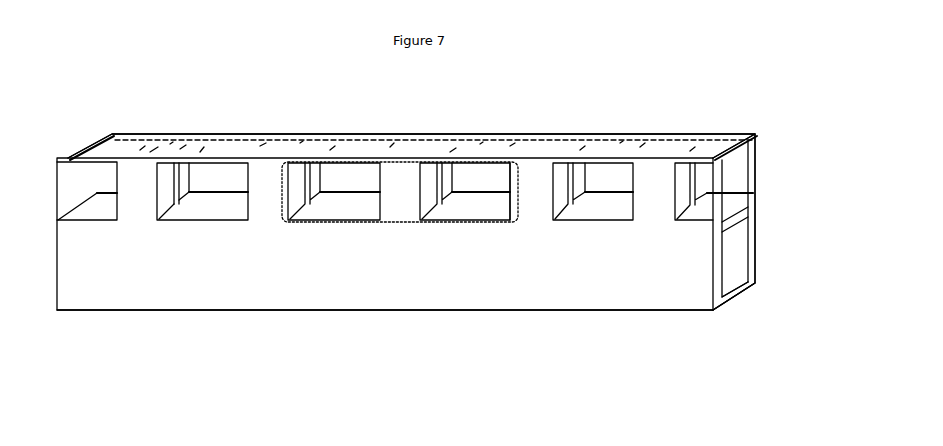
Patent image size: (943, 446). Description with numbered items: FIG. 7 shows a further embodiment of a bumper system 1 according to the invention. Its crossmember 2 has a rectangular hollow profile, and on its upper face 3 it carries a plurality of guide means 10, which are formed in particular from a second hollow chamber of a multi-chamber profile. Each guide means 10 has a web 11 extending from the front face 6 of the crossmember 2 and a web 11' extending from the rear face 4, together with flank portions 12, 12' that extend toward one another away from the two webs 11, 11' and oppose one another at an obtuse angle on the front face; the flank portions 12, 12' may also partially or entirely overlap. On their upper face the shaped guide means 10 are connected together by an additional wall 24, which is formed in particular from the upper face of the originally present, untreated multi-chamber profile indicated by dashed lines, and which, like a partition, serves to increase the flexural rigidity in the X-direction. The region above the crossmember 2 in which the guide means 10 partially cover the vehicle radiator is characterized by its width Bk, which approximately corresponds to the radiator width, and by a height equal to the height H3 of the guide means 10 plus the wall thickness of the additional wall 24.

The bumper system 1 is at (160, 328).
The crossmember 2 is at (628, 323).
The upper face 3 is at (727, 200).
The rear face 4 is at (755, 250).
The front face 6 is at (715, 262).
The guide means 10 is at (117, 185).
The web 11 is at (189, 191).
The web 11' is at (177, 110).
The flank portion 12 is at (194, 257).
The flank portion 12' is at (236, 271).
The additional wall 24 is at (611, 147).
The width Bk is at (285, 222).
The height of the guide means H3 is at (519, 163).